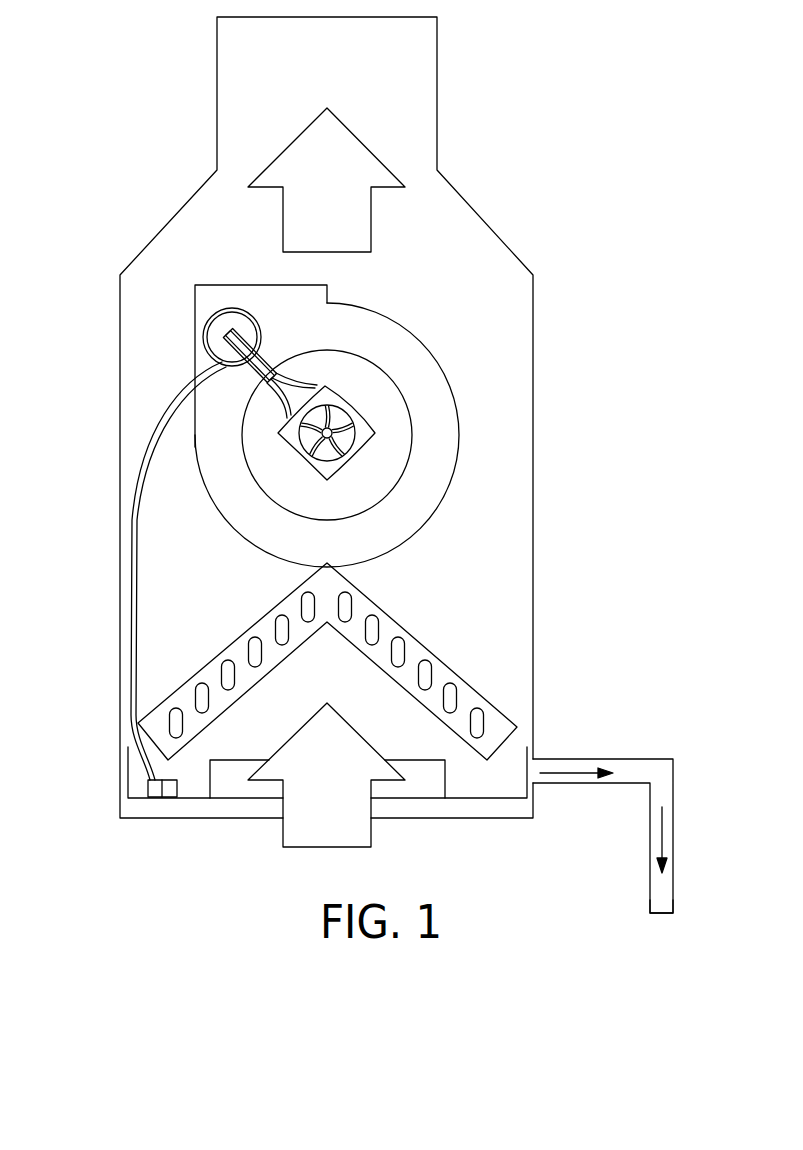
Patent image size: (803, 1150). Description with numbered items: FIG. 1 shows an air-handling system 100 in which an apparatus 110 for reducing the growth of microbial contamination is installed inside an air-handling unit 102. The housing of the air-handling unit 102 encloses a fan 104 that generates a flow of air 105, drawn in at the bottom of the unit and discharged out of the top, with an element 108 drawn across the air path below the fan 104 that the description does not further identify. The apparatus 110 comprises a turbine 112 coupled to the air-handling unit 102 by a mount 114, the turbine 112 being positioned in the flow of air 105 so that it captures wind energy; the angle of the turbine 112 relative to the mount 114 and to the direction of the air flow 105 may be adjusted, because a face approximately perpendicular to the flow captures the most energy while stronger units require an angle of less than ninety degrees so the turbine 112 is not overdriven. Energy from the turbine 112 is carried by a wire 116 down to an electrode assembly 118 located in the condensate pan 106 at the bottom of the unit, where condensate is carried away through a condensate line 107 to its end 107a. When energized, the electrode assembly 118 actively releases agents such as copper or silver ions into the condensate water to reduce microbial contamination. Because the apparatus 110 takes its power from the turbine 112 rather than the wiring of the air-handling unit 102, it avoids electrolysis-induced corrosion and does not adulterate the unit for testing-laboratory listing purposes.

The heating and cooling system 100 is at (118, 162).
The air-handling unit 102 is at (200, 290).
The fan 104 is at (257, 433).
The flow of air 105 is at (357, 155).
The inlet 106 is at (197, 800).
The drain duct 107 is at (603, 758).
The drain outlet 107a is at (660, 917).
The filter 108 is at (482, 690).
The apparatus 110 is at (368, 378).
The turbine 112 is at (357, 447).
The mount 114 is at (205, 333).
The wire 116 is at (138, 487).
The electrode assembly 118 is at (153, 798).